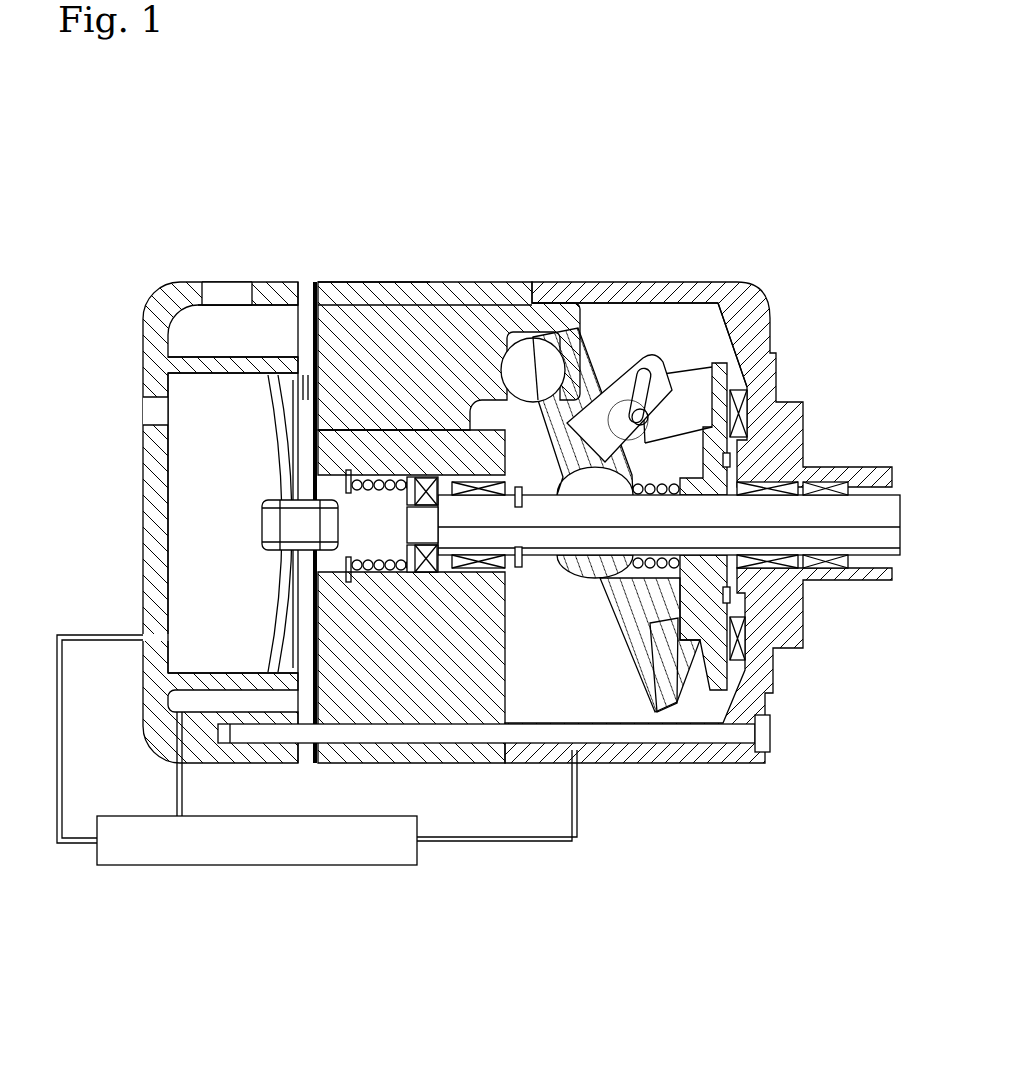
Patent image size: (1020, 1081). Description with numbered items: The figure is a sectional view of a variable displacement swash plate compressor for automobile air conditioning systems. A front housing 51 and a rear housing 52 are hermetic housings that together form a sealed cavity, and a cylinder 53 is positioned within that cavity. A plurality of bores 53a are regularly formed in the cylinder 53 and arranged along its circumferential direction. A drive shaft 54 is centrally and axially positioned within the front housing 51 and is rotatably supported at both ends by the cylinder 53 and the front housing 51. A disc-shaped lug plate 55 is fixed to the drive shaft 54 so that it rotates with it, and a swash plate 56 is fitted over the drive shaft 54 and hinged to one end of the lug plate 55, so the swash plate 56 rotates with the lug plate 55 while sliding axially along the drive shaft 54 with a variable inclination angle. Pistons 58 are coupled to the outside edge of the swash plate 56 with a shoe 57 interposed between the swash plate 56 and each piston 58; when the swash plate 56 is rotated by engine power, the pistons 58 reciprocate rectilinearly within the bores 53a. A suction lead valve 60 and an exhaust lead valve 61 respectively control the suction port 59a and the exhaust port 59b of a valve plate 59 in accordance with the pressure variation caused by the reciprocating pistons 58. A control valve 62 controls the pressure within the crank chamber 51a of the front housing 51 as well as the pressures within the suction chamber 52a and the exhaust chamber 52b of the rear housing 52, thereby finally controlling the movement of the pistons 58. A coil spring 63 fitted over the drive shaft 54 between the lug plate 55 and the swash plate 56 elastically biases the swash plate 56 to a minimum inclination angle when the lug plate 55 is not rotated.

The front housing 51 is at (608, 294).
The crank chamber 51a is at (685, 335).
The rear housing 52 is at (158, 484).
The suction chamber 52a is at (183, 330).
The exhaust chamber 52b is at (185, 545).
The cylinder 53 is at (500, 636).
The bores 53a is at (385, 318).
The drive shaft 54 is at (890, 532).
The lug plate 55 is at (693, 637).
The swash plate 56 is at (655, 693).
The shoe 57 is at (560, 358).
The pistons 58 is at (467, 318).
The valve plate 59 is at (305, 570).
The suction port 59a is at (307, 331).
The exhaust port 59b is at (307, 398).
The suction lead valve 60 is at (318, 420).
The exhaust lead valve 61 is at (293, 477).
The control valve 62 is at (188, 850).
The coil spring 63 is at (635, 488).